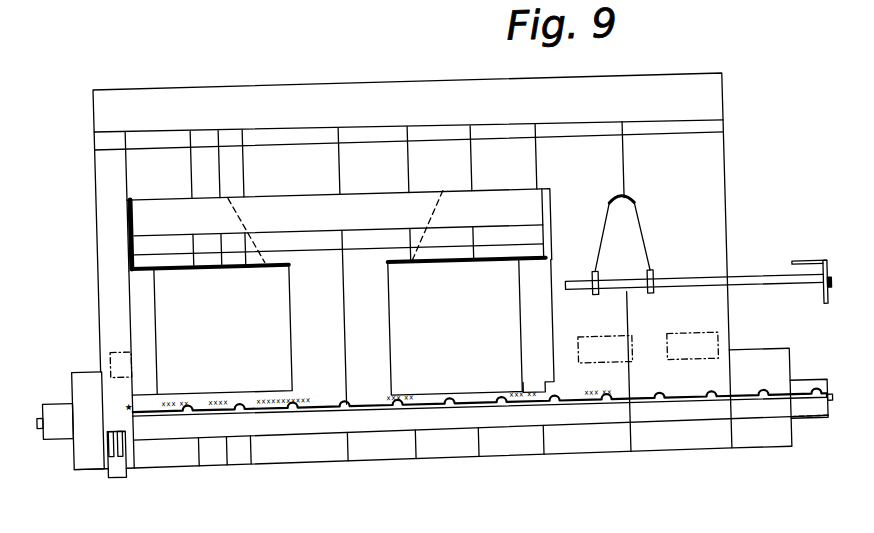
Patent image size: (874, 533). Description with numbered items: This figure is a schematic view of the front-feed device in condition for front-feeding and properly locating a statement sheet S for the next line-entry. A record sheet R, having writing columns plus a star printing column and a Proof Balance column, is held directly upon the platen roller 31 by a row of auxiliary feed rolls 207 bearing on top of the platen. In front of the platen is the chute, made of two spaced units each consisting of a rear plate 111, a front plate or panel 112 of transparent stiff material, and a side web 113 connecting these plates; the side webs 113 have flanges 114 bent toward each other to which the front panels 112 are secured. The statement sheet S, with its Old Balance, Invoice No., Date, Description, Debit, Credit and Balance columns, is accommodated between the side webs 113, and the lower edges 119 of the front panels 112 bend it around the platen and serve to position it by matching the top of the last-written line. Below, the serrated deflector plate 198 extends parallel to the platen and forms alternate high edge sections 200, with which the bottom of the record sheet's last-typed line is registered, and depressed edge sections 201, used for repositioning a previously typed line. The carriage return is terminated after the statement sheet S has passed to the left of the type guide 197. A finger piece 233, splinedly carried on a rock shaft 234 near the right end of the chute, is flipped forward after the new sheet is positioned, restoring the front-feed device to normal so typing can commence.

The record sheet R is at (723, 167).
The statement sheet S is at (338, 217).
The rear plate 111 is at (227, 206).
The side web 113 is at (126, 247).
The flange 114 is at (146, 357).
The front plate or panel 112 is at (386, 344).
The finger piece 233 is at (628, 248).
The rock shaft 234 is at (755, 296).
The auxiliary feed roll 207 is at (103, 356).
The high edge section 200 is at (699, 409).
The low (depressed) edge section 201 is at (296, 420).
The lower edge of front panel 119 is at (469, 416).
The deflector plate 198 is at (385, 440).
The platen roller 31 is at (756, 464).
The type guide 197 is at (105, 480).